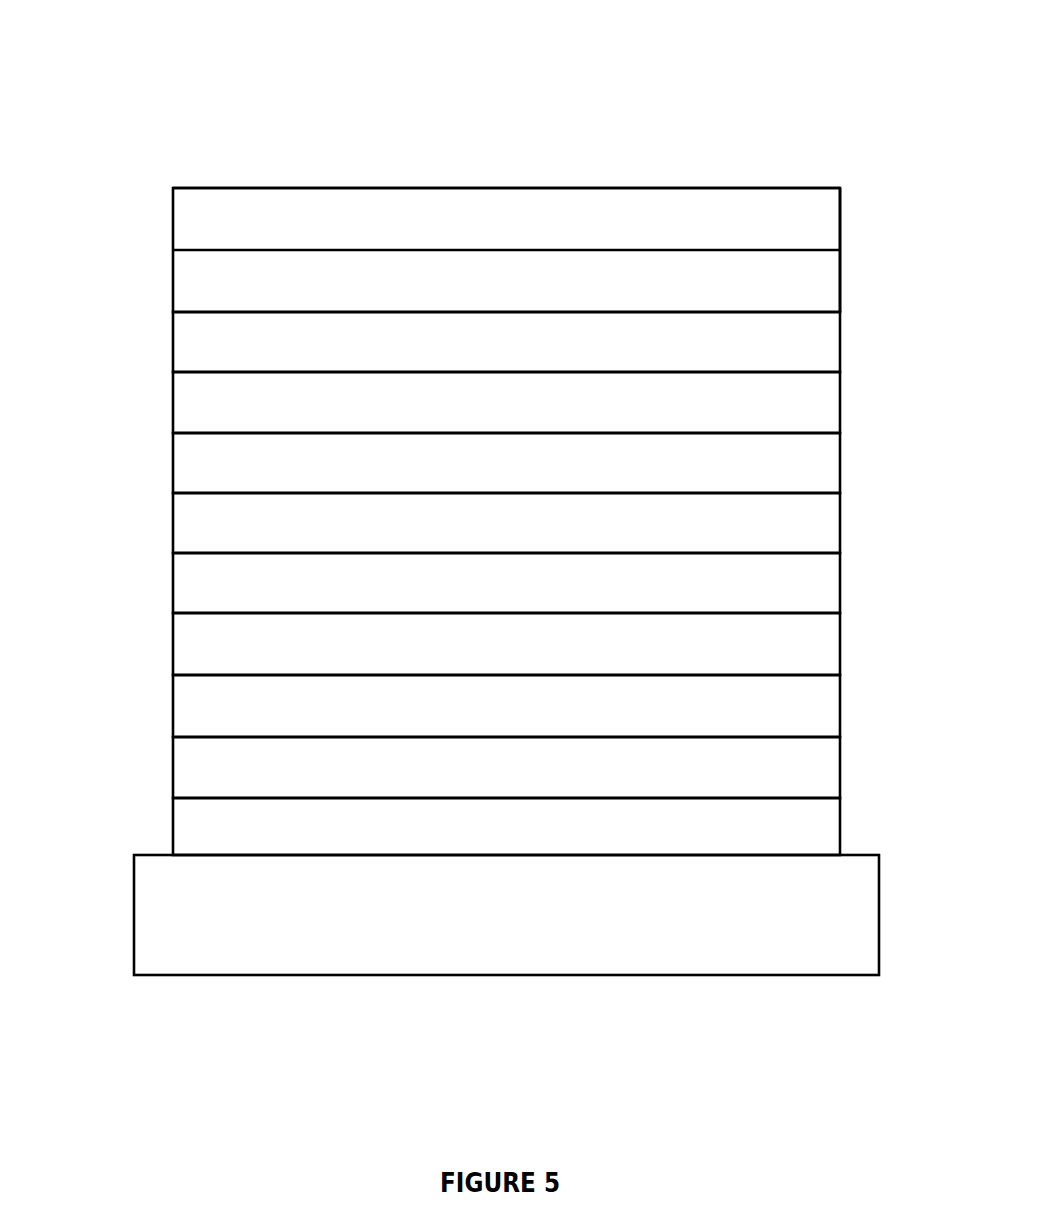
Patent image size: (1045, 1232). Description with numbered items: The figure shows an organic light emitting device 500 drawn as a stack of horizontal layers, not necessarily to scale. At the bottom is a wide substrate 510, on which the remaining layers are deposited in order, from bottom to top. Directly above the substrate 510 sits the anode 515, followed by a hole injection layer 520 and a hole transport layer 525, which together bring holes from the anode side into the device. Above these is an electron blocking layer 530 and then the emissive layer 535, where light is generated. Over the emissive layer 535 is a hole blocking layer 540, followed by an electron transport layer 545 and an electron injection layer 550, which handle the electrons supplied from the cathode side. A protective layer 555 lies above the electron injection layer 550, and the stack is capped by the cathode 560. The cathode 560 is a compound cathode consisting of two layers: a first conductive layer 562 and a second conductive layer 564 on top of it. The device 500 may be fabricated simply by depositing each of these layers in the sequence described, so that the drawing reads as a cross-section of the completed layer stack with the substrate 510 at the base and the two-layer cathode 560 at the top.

The organic light emitting device 500 is at (333, 172).
The substrate 510 is at (458, 975).
The anode 515 is at (173, 826).
The hole injection layer 520 is at (173, 766).
The hole transport layer 525 is at (173, 706).
The electron blocking layer 530 is at (173, 646).
The emissive layer 535 is at (173, 586).
The hole blocking layer 540 is at (173, 526).
The electron transport layer 545 is at (173, 465).
The electron injection layer 550 is at (173, 402).
The protective layer 555 is at (173, 344).
The cathode 560 is at (173, 280).
The first conductive layer 562 is at (840, 274).
The second conductive layer 564 is at (603, 187).